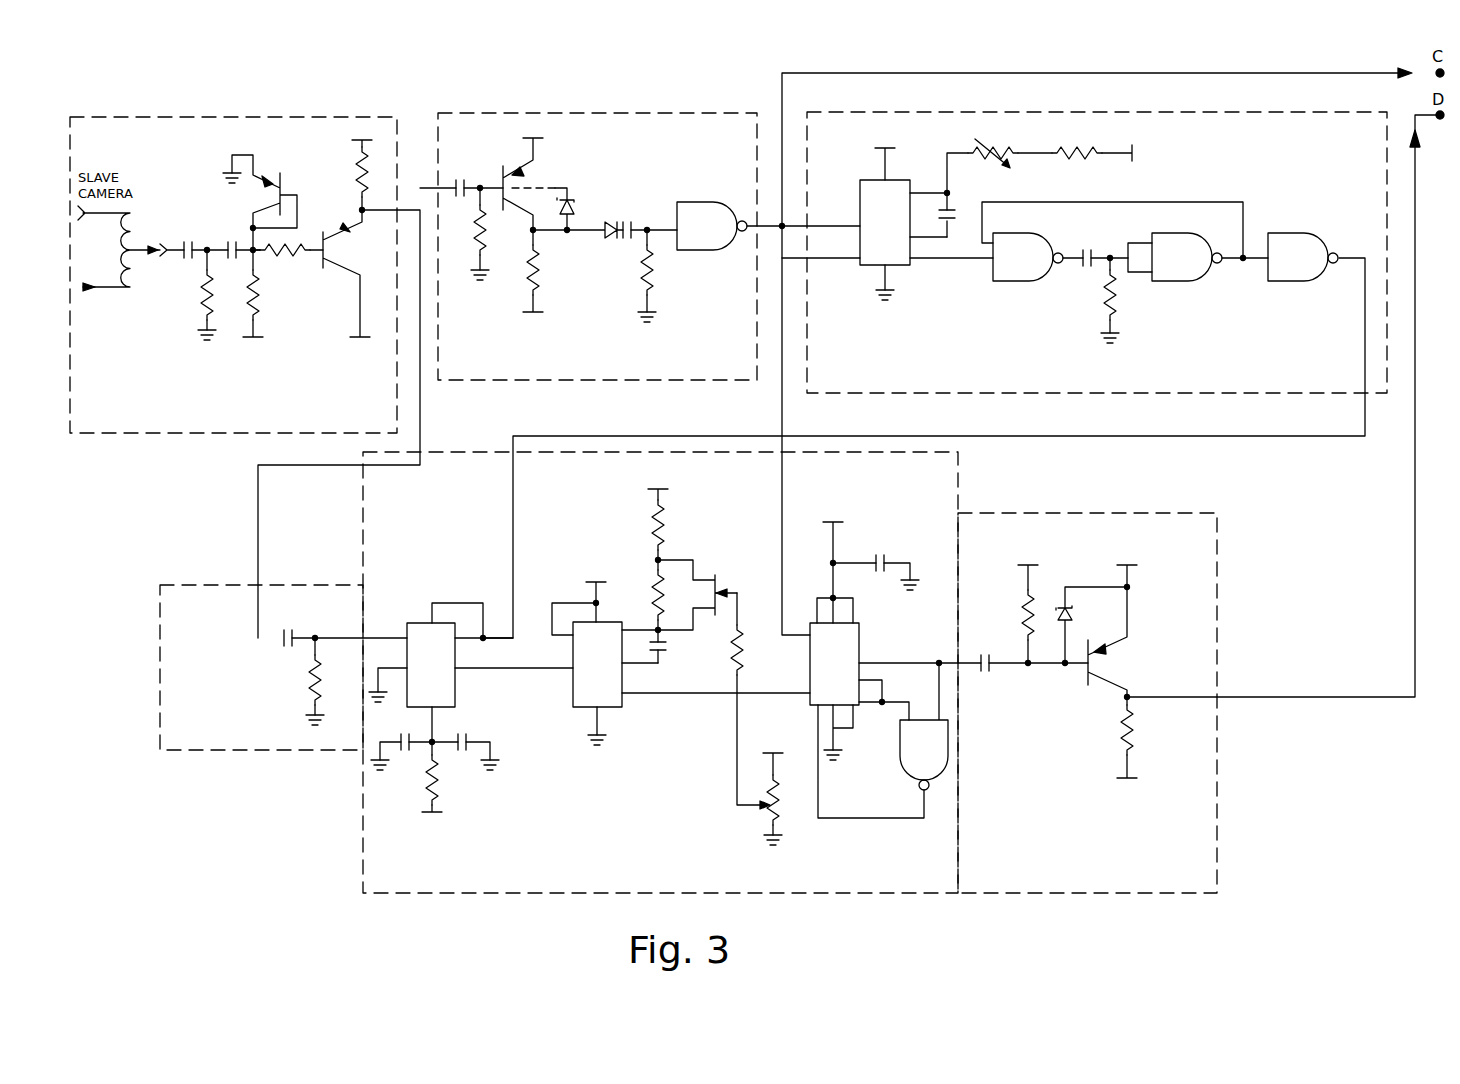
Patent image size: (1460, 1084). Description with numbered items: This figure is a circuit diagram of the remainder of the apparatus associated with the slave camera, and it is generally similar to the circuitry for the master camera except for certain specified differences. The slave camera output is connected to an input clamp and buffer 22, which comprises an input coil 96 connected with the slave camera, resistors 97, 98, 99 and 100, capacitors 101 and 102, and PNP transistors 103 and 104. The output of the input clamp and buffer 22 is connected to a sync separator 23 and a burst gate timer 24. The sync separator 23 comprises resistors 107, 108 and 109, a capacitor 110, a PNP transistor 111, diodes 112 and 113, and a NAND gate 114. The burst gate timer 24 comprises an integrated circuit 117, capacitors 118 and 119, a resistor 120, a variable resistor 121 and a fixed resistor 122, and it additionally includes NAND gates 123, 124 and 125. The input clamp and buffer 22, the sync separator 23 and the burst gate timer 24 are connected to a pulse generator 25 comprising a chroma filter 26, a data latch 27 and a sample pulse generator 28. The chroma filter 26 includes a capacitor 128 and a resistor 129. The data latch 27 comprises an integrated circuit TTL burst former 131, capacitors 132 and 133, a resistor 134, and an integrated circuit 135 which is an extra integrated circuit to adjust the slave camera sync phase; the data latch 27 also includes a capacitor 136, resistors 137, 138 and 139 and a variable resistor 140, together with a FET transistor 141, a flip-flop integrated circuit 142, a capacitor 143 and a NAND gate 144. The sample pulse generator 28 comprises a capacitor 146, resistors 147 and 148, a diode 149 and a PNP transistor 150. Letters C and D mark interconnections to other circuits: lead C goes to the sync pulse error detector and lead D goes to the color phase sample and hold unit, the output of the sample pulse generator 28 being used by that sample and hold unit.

The input clamp and buffer 22 is at (177, 123).
The sync separator 23 is at (626, 122).
The burst gate timer 24 is at (1260, 396).
The pulse generator 25 is at (542, 897).
The chroma filter 26 is at (216, 573).
The data latch 27 is at (362, 536).
The sample pulse generator 28 is at (1217, 582).
The input coil 96 is at (130, 230).
The resistor 97 is at (200, 298).
The resistor 98 is at (258, 285).
The resistor 99 is at (372, 170).
The resistor 100 is at (288, 254).
The capacitor 101 is at (195, 249).
The capacitor 102 is at (239, 249).
The PNP transistor 103 is at (281, 180).
The PNP transistor 104 is at (323, 270).
The resistor 107 is at (486, 228).
The resistor 108 is at (538, 276).
The resistor 109 is at (652, 278).
The capacitor 110 is at (470, 174).
The PNP transistor 111 is at (525, 175).
The diode 112 is at (572, 205).
The diode 113 is at (612, 242).
The NAND gate 114 is at (698, 251).
The integrated circuit 117 is at (864, 186).
The capacitor 118 is at (955, 210).
The capacitor 119 is at (1092, 250).
The resistor 120 is at (1115, 143).
The variable resistor 121 is at (999, 157).
The fixed resistor 122 is at (1114, 306).
The NAND gate 123 is at (1022, 284).
The NAND gate 124 is at (1188, 282).
The NAND gate 125 is at (1292, 282).
The capacitor 128 is at (296, 634).
The resistor 129 is at (310, 680).
The integrated circuit TTL burst former 131 is at (414, 623).
The capacitor 132 is at (412, 730).
The capacitor 133 is at (466, 740).
The resistor 134 is at (438, 780).
The integrated circuit 135 is at (570, 684).
The capacitor 136 is at (666, 652).
The resistor 137 is at (666, 540).
The resistor 138 is at (652, 612).
The resistor 139 is at (740, 666).
The variable resistor 140 is at (780, 812).
The FET transistor 141 is at (722, 580).
The flip-flop integrated circuit 142 is at (853, 642).
The capacitor 143 is at (884, 566).
The NAND gate 144 is at (898, 770).
The capacitor 146 is at (1000, 650).
The resistor 147 is at (1023, 614).
The resistor 148 is at (1135, 730).
The diode 149 is at (1075, 614).
The PNP transistor 150 is at (1082, 692).